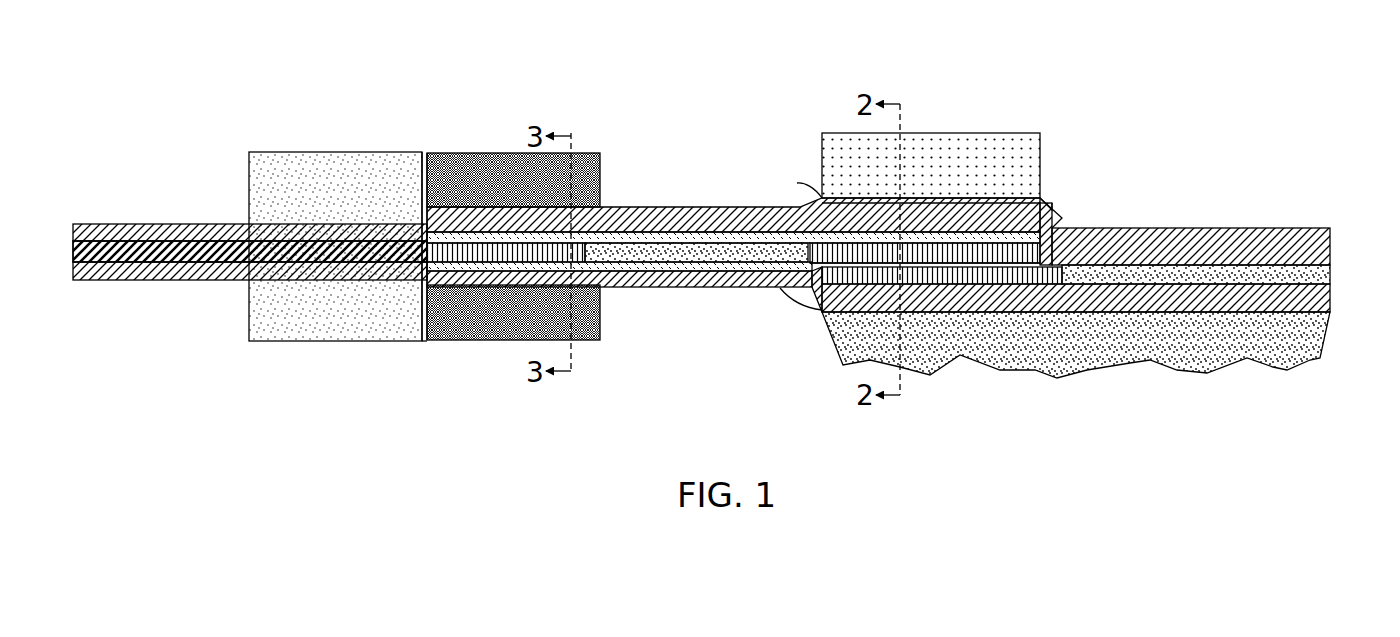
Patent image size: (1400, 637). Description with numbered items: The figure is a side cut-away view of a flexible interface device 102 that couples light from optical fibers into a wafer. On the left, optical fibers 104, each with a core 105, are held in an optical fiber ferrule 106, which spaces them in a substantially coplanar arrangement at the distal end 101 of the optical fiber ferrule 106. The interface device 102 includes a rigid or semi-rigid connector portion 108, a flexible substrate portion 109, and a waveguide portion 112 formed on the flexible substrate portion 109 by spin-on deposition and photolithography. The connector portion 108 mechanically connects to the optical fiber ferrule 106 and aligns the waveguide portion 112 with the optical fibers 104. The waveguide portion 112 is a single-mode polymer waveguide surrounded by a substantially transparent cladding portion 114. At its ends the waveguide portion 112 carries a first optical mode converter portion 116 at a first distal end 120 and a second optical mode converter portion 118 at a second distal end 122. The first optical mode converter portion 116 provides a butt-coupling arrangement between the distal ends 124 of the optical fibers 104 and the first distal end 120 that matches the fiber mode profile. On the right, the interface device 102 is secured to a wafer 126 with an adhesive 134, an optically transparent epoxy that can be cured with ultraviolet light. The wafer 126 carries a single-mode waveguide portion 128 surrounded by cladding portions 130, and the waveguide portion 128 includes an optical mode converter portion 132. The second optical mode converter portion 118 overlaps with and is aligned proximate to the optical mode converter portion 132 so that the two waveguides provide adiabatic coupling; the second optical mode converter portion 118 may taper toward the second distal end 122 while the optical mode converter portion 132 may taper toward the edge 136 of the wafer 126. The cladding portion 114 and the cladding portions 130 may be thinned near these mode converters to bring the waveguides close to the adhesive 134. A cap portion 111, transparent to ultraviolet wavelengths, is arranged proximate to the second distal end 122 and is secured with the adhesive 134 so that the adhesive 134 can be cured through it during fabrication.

The distal end of the optical fiber ferrule 101 is at (425, 345).
The flexible interface device 102 is at (750, 70).
The optical fiber 104 is at (157, 232).
The core of the optical fiber 105 is at (157, 262).
The optical fiber ferrule 106 is at (347, 165).
The connector portion 108 is at (522, 163).
The flexible substrate portion 109 is at (663, 218).
The cap portion 111 is at (928, 143).
The waveguide portion 112 is at (652, 252).
The cladding portion 114 is at (708, 240).
The first optical mode converter portion 116 is at (513, 312).
The second optical mode converter portion 118 is at (980, 231).
The first distal end of the waveguide portion 120 is at (422, 176).
The second distal end of the waveguide portion 122 is at (1050, 210).
The distal end of the optical fiber 124 is at (433, 196).
The wafer 126 is at (1104, 261).
The waveguide portion of the wafer 128 is at (1328, 274).
The cladding portion of the wafer 130 is at (1123, 240).
The optical mode converter portion of the wafer 132 is at (956, 303).
The adhesive 134 is at (805, 188).
The edge of the wafer 136 is at (822, 309).